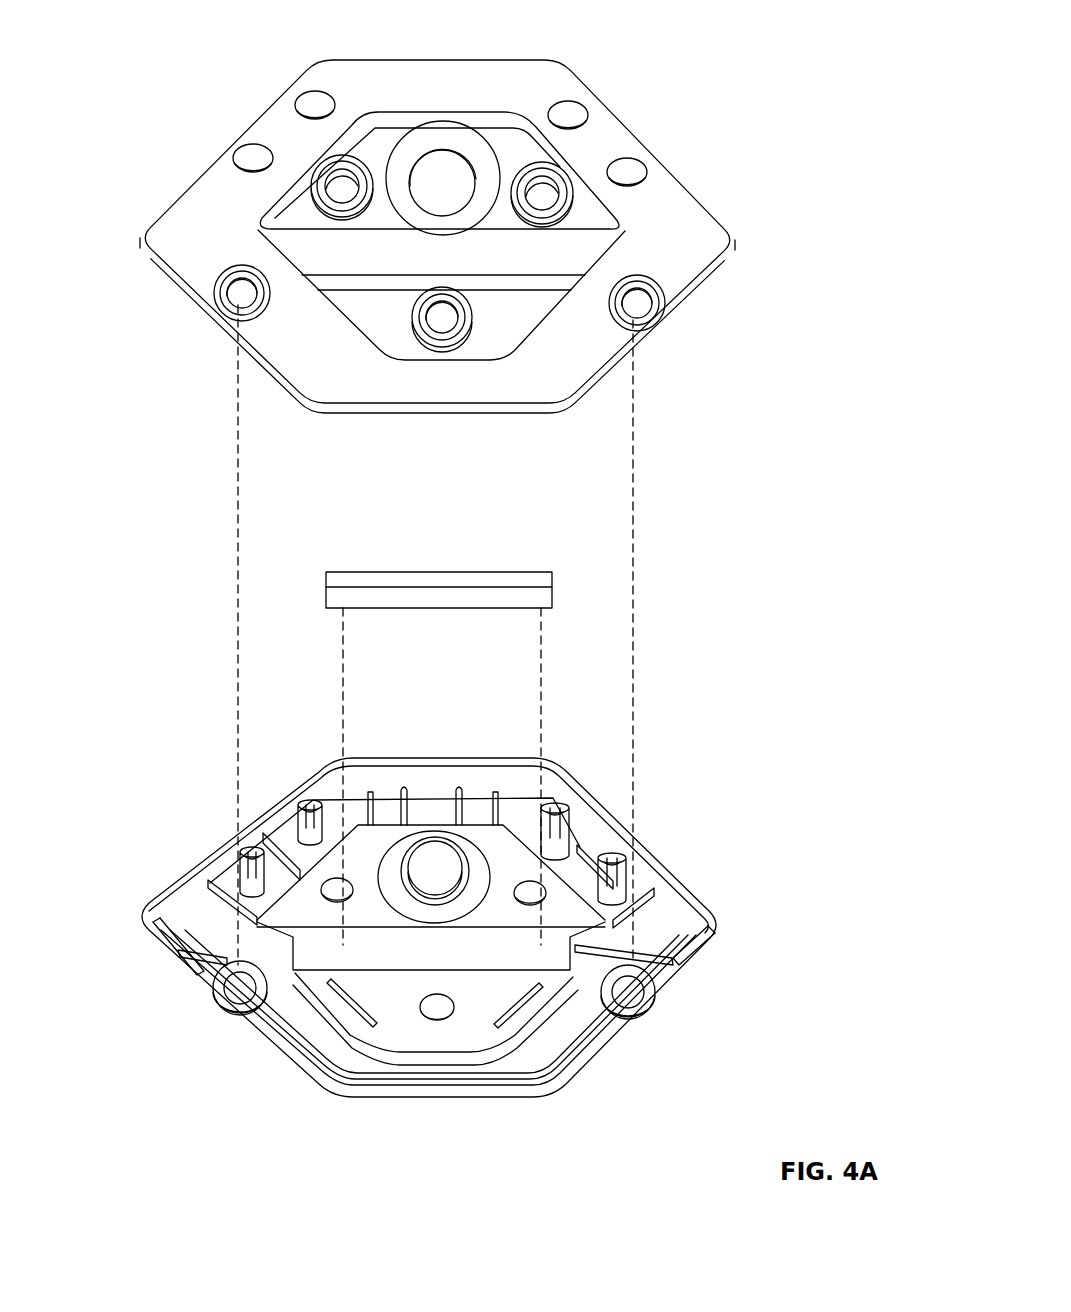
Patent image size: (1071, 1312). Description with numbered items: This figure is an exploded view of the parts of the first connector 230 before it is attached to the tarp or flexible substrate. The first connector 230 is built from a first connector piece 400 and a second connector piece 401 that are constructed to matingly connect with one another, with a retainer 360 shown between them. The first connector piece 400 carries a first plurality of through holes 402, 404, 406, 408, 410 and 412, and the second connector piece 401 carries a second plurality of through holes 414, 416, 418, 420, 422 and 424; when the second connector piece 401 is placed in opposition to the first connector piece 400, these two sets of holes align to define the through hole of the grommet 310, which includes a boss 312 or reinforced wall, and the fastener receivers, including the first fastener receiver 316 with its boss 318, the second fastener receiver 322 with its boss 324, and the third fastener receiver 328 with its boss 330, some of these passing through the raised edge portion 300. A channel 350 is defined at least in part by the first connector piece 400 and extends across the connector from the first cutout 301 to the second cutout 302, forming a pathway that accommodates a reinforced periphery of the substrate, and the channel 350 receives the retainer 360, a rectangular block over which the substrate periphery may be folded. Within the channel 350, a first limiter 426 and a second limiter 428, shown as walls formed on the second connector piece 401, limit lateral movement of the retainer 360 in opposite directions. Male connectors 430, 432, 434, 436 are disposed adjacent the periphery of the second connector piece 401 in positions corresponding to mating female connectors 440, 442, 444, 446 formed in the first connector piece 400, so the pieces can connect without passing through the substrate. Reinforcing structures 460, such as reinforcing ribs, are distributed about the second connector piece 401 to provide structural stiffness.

The first connector 230 is at (752, 33).
The raised edge portion 300 is at (693, 248).
The first cutout 301 is at (704, 951).
The second cutout 302 is at (156, 943).
The grommet 310 is at (496, 142).
The boss 312 is at (430, 140).
The first fastener receiver 316 is at (305, 208).
The boss 318 is at (338, 168).
The second fastener receiver 322 is at (554, 163).
The boss 324 is at (540, 206).
The third fastener receiver 328 is at (481, 333).
The boss 330 is at (449, 343).
The channel 350 is at (323, 250).
The retainer 360 is at (548, 572).
The first connector piece 400 is at (716, 329).
The second connector piece 401 is at (727, 750).
The through hole 402 is at (446, 188).
The through hole 404 is at (342, 195).
The through hole 406 is at (545, 200).
The through hole 408 is at (437, 320).
The through hole 410 is at (240, 296).
The through hole 412 is at (636, 308).
The through hole 414 is at (440, 880).
The through hole 416 is at (337, 890).
The through hole 418 is at (531, 892).
The through hole 420 is at (343, 1075).
The through hole 422 is at (240, 988).
The through hole 424 is at (628, 992).
The first limiter 426 is at (152, 927).
The second limiter 428 is at (658, 953).
The male connector 430 is at (250, 858).
The male connector 432 is at (312, 805).
The male connector 434 is at (556, 812).
The male connector 436 is at (612, 858).
The female connector 440 is at (238, 160).
The female connector 442 is at (298, 104).
The female connector 444 is at (562, 110).
The female connector 446 is at (641, 172).
The reinforcing structures 460 is at (372, 798).